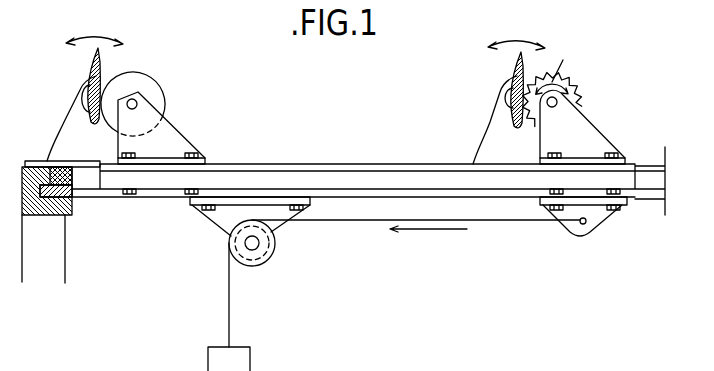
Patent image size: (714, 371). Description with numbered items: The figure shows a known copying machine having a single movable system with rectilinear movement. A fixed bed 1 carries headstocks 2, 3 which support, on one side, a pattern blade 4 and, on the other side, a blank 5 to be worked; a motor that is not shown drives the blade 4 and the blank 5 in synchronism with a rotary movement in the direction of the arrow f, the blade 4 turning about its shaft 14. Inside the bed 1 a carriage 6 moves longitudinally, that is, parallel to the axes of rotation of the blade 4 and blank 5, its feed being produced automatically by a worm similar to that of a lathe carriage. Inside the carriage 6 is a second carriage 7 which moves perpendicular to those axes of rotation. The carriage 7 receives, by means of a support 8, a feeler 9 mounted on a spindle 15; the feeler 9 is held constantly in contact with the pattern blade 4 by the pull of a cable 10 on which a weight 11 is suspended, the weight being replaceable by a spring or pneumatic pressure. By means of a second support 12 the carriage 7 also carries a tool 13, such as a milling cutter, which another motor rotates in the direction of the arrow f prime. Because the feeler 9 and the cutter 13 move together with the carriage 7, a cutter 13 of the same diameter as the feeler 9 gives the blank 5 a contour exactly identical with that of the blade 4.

The fixed bed 1 is at (43, 212).
The headstock 2 is at (72, 127).
The headstock 3 is at (490, 137).
The pattern blade 4 is at (100, 66).
The blank 5 is at (517, 63).
The carriage 6 is at (65, 196).
The second carriage 7 is at (148, 177).
The support 8 is at (160, 138).
The feeler 9 is at (157, 75).
The cable 10 is at (325, 221).
The weight 11 is at (235, 352).
The support 12 is at (593, 123).
The tool 13 is at (575, 88).
The shaft 14 is at (88, 100).
The spindle 15 is at (140, 104).